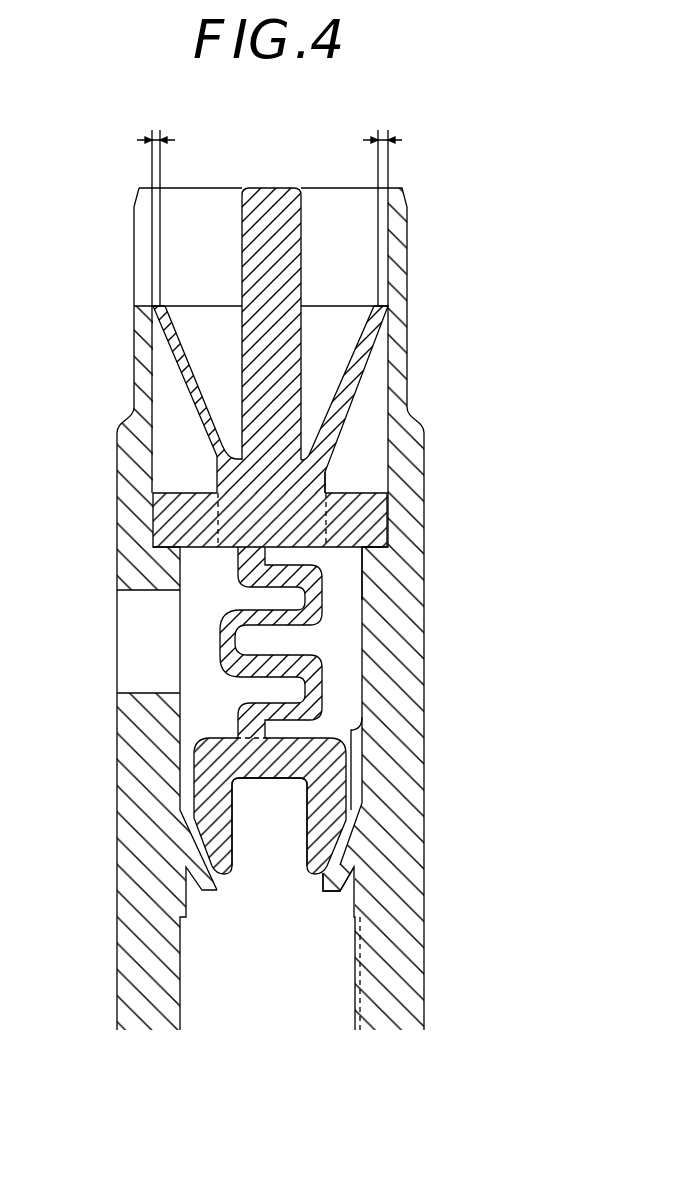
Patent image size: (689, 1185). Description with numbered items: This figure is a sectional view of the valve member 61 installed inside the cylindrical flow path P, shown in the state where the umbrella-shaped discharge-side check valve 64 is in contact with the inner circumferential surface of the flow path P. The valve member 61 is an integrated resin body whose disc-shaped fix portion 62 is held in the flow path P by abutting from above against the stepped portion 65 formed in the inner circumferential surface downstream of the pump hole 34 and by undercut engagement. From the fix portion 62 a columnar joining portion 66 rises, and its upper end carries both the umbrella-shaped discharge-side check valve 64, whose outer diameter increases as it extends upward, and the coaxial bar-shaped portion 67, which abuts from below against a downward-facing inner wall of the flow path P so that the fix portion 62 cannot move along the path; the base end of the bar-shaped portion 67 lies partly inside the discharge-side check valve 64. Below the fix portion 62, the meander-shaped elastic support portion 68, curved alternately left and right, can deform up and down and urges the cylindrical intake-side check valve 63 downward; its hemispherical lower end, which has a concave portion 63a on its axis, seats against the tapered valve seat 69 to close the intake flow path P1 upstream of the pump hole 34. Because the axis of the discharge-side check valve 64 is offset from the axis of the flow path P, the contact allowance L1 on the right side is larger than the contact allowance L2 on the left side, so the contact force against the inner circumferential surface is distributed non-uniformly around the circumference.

The pump hole 34 is at (143, 638).
The valve member 61 is at (328, 473).
The fix portion 62 is at (190, 520).
The intake-side check valve 63 is at (337, 780).
The concave portion 63a is at (268, 810).
The discharge-side check valve 64 is at (350, 349).
The stepped portion 65 is at (380, 558).
The joining portion 66 is at (238, 478).
The bar-shaped portion 67 is at (270, 200).
The elastic support portion 68 is at (322, 679).
The valve seat 69 is at (332, 887).
The flow path P is at (367, 403).
The intake flow path P1 is at (290, 977).
The contact allowance L1 is at (382, 123).
The contact allowance L2 is at (156, 123).